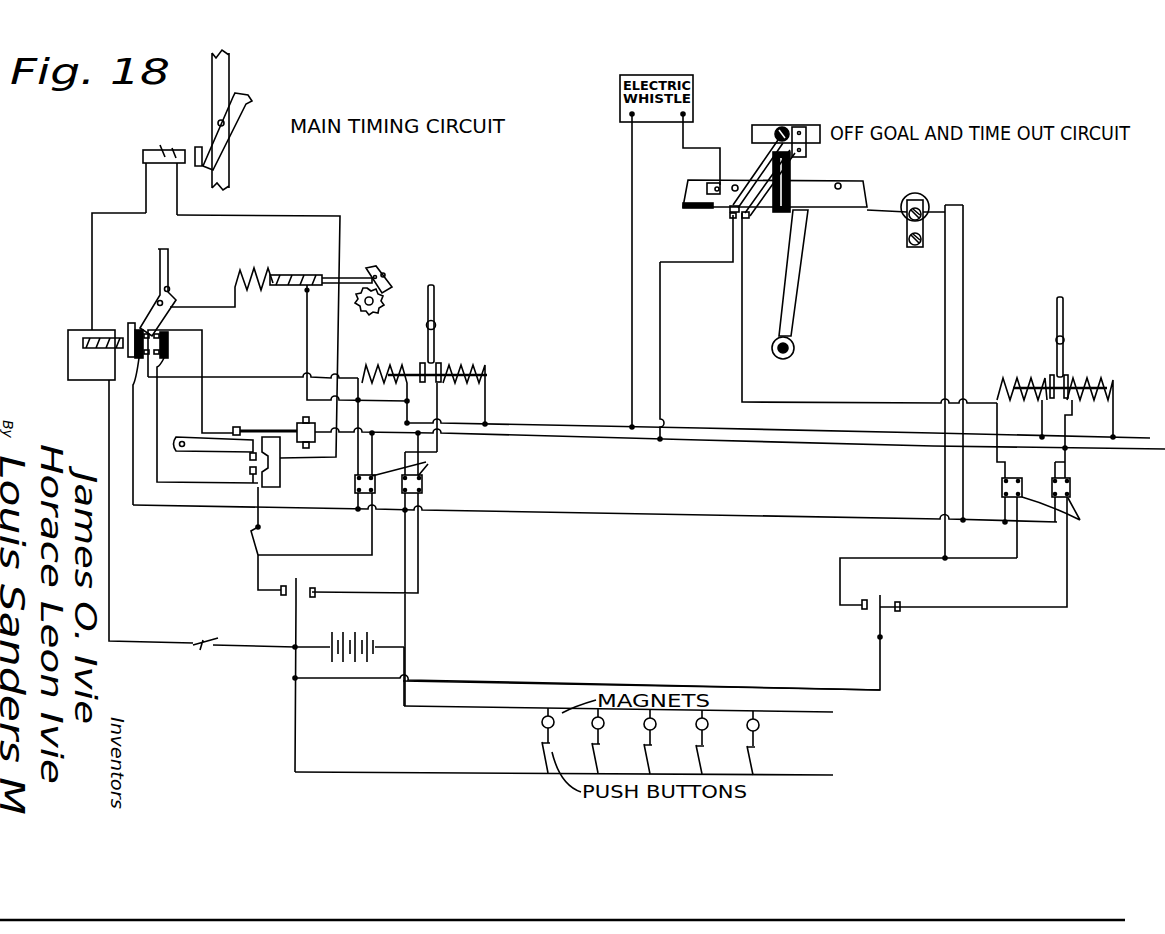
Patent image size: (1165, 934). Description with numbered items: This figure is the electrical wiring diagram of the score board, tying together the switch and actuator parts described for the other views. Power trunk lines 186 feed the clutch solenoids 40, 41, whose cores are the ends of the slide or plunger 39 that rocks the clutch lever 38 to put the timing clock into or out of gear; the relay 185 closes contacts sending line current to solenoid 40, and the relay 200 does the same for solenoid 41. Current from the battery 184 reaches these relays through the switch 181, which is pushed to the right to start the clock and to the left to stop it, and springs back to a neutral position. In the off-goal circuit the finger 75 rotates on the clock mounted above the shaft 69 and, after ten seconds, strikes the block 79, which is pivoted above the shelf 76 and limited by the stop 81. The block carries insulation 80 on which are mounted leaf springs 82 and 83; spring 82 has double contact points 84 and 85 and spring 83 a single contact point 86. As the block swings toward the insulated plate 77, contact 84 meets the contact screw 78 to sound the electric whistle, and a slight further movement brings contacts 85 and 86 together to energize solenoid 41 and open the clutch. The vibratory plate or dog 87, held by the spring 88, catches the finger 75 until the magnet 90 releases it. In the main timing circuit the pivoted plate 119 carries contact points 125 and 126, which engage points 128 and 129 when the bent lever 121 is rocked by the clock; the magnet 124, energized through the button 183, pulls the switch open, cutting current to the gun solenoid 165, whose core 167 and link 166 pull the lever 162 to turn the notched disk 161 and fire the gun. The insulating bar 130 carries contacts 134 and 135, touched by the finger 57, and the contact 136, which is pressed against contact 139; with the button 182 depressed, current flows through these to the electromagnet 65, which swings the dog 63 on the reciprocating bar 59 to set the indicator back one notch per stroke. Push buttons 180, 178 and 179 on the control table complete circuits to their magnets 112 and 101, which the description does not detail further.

The reciprocatory bar 59 is at (231, 160).
The dog 63 is at (210, 128).
The electromagnet 65 is at (159, 168).
The bent lever 121 is at (168, 249).
The frame or plate 119 is at (144, 311).
The contact point 126 is at (132, 326).
The contact point 129 is at (206, 397).
The magnet 124 is at (95, 355).
The contact point 125 is at (130, 383).
The contact point 128 is at (160, 364).
The plate or bar of insulation 130 is at (205, 452).
The contact 134 is at (240, 428).
The finger 57 is at (253, 420).
The contact 136 is at (233, 462).
The contact 139 is at (250, 476).
The contact 135 is at (270, 452).
The solenoid 165 is at (268, 275).
The link 166 is at (350, 268).
The solenoid core 167 is at (326, 277).
The lever 162 is at (390, 273).
The notched disk 161 is at (385, 305).
The lever 38 is at (435, 300).
The slide 39 is at (1048, 382).
The solenoid 40 is at (781, 388).
The solenoid 41 is at (702, 381).
The power trunk lines 186 is at (537, 437).
The relay 200 is at (355, 482).
The relay 185 is at (425, 483).
The button 182 is at (260, 536).
The switch 181 is at (298, 570).
The button 183 is at (245, 655).
The battery 184 is at (372, 648).
The magnet 112 is at (542, 722).
The magnet 101 is at (644, 724).
The push button 180 is at (523, 757).
The push button 178 is at (603, 752).
The push button 179 is at (745, 753).
The frame or plate 77 is at (760, 194).
The bracket or shelf 76 is at (855, 197).
The contact screw 78 is at (732, 183).
The block 79 is at (780, 126).
The stop 81 is at (806, 150).
The insulation 80 is at (797, 182).
The leaf spring 82 is at (772, 150).
The leaf spring 83 is at (758, 214).
The contact point 84 is at (730, 210).
The contact point 85 is at (742, 216).
The contact point 86 is at (736, 220).
The spring 88 is at (906, 207).
The vibratory plate or dog 87 is at (885, 223).
The electromagnet 90 is at (909, 240).
The finger 75 is at (797, 293).
The shaft 69 is at (795, 348).